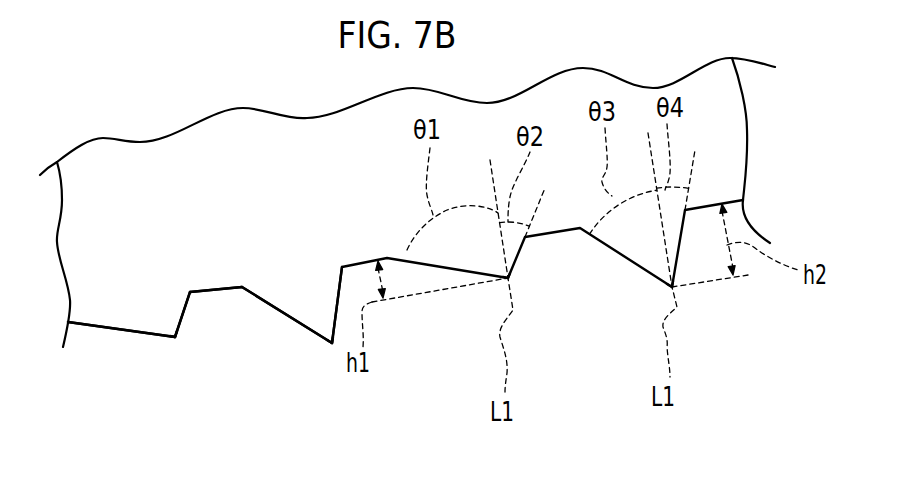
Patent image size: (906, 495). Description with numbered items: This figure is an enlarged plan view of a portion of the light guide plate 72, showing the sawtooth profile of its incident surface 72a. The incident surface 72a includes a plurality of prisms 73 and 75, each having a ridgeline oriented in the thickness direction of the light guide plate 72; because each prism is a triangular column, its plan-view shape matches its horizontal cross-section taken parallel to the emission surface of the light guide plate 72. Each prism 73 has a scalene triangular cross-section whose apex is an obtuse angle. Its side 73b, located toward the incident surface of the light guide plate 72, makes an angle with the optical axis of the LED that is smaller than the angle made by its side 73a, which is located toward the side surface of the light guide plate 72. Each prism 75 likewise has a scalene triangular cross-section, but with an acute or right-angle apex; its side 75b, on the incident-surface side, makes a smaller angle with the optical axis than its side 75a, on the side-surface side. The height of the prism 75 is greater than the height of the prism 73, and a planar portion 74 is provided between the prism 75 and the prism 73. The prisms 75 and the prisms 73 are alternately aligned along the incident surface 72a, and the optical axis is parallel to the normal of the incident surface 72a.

The light guide plate 72 is at (147, 200).
The incident surface 72a is at (402, 354).
The prism 73 is at (179, 358).
The side of the prism 73a is at (122, 331).
The side of the prism 73b is at (182, 322).
The planar portion 74 is at (213, 287).
The prism 75 is at (324, 357).
The side of the prism 75a is at (278, 302).
The side of the prism 75b is at (333, 291).